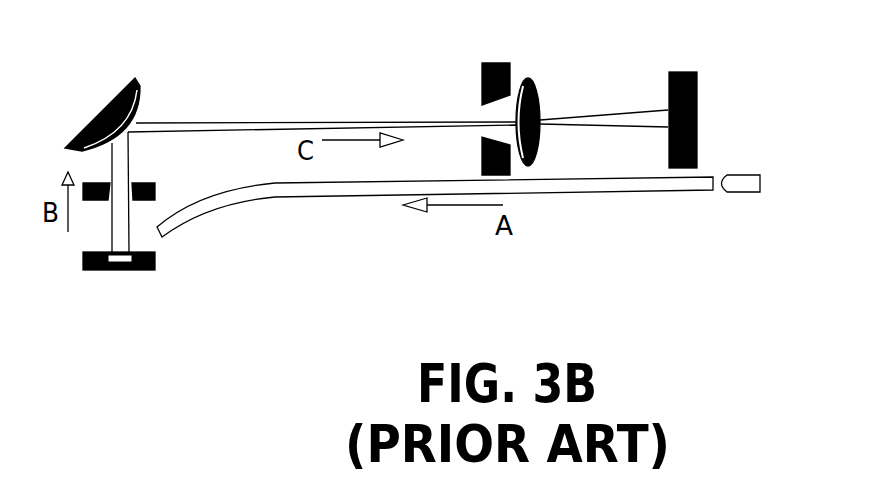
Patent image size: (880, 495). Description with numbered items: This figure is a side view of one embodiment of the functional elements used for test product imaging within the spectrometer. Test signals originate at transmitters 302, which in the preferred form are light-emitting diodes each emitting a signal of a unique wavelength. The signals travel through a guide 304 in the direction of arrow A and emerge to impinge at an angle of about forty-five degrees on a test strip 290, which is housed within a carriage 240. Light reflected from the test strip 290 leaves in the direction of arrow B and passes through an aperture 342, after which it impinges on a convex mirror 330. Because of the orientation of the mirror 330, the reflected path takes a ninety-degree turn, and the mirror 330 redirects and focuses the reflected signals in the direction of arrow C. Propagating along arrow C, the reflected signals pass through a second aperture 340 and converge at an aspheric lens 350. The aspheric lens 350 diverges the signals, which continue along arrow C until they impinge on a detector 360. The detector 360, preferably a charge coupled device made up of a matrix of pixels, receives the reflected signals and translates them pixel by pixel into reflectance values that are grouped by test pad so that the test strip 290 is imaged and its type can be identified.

The carriage 240 is at (90, 272).
The test strip 290 is at (107, 283).
The transmitters 302 is at (783, 156).
The guide 304 is at (660, 207).
The convex mirror 330 is at (159, 200).
The aperture 340 is at (483, 90).
The aperture 342 is at (145, 214).
The aspheric lens 350 is at (537, 97).
The detector 360 is at (684, 182).